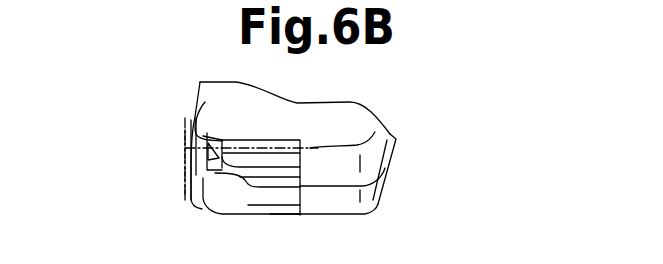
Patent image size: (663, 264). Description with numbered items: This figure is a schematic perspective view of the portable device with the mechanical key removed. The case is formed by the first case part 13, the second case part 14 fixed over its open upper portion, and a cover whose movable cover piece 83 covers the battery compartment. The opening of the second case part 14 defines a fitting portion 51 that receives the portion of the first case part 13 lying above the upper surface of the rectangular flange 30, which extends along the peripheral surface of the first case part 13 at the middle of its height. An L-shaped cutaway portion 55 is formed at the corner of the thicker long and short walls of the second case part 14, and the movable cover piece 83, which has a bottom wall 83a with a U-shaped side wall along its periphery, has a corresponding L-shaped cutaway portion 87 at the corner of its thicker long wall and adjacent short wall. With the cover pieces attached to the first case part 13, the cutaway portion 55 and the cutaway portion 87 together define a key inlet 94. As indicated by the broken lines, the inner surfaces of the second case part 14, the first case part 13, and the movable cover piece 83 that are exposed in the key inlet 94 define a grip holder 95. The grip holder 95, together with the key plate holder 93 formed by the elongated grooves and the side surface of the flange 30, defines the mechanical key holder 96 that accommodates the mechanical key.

The second case part 14 is at (330, 109).
The movable cover piece 83 is at (392, 157).
The fitting portion 51 is at (272, 158).
The L-shaped cutaway portion 55 is at (225, 140).
The mechanical key holder 96 is at (120, 122).
The key plate holder 93 is at (190, 155).
The grip holder 95 is at (188, 174).
The key inlet 94 is at (193, 184).
The flange 30 is at (207, 203).
The first case part 13 is at (242, 178).
The bottom wall 83a is at (278, 197).
The L-shaped cutaway portion 87 is at (287, 207).